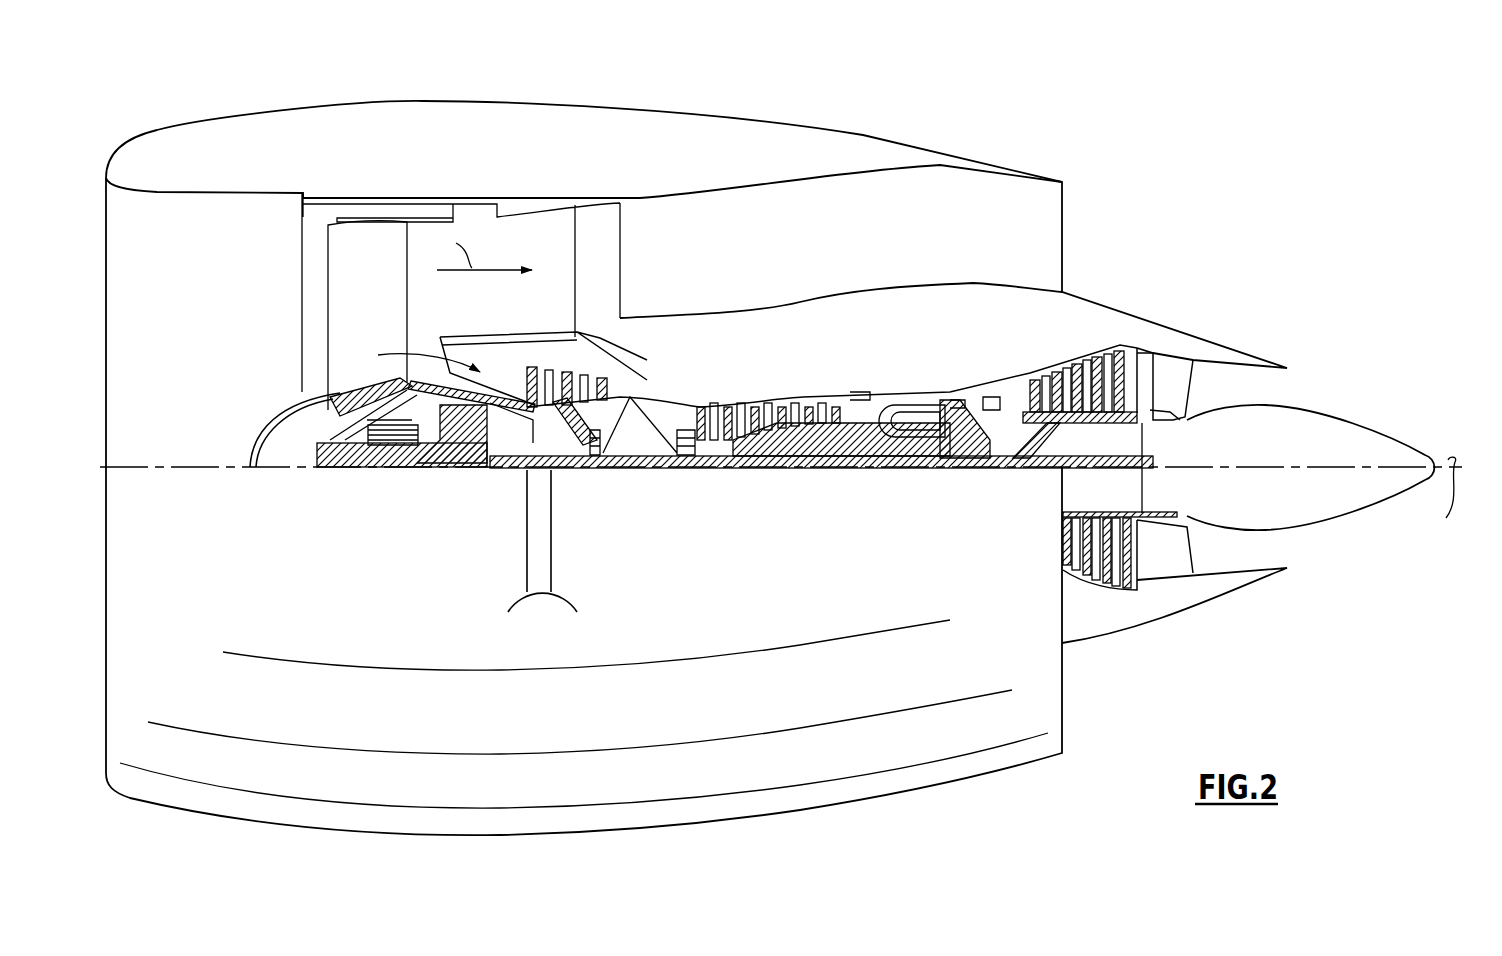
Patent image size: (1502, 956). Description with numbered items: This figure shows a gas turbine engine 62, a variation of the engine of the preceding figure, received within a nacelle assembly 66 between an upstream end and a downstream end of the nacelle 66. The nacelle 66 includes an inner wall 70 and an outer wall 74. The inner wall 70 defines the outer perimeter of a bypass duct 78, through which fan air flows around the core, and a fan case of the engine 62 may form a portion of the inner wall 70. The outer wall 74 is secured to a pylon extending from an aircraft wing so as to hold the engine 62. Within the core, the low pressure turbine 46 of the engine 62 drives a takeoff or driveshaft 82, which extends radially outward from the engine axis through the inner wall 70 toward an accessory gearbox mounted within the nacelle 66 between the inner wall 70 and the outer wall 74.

The engine 62 is at (1257, 160).
The nacelle assembly 66 is at (863, 135).
The inner wall 70 is at (733, 190).
The outer wall 74 is at (693, 110).
The bypass duct 78 is at (685, 238).
The low pressure turbine 46 is at (1118, 347).
The driveshaft 82 is at (551, 530).